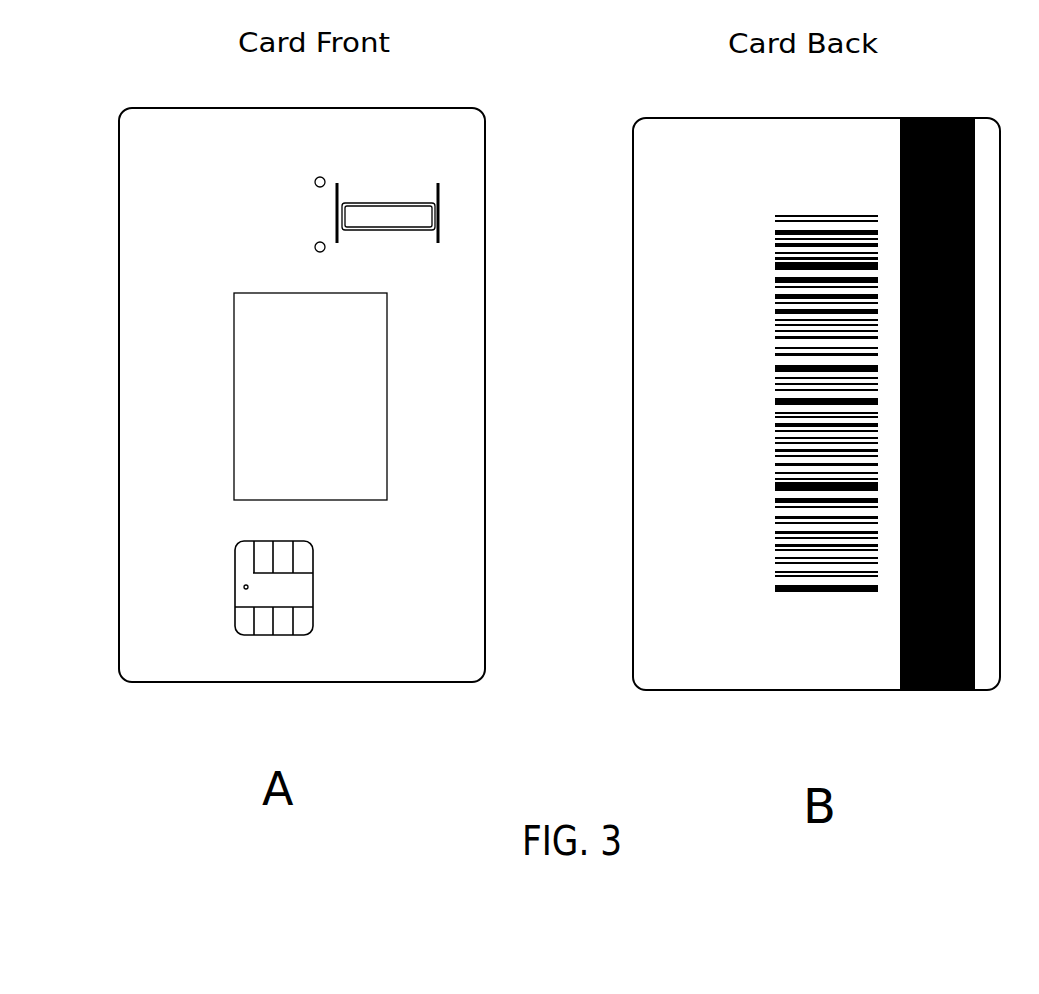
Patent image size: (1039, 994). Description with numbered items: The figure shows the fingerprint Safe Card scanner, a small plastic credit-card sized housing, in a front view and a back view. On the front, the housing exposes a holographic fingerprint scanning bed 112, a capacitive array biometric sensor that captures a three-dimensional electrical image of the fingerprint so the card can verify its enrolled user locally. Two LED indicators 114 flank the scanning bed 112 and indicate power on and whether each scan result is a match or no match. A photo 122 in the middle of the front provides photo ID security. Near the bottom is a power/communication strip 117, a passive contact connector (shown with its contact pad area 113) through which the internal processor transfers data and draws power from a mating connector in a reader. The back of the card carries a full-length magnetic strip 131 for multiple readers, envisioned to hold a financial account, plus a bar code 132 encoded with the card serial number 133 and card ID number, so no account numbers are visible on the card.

The holographic fingerprint scanning bed 112 is at (420, 215).
The smart card chip 113 is at (246, 589).
The LED indicators 114 is at (325, 158).
The power/communication strip 117 is at (280, 597).
The photo 122 is at (310, 396).
The magnetic strip 131 is at (952, 692).
The bar code 132 is at (822, 590).
The card serial number 133 is at (757, 593).